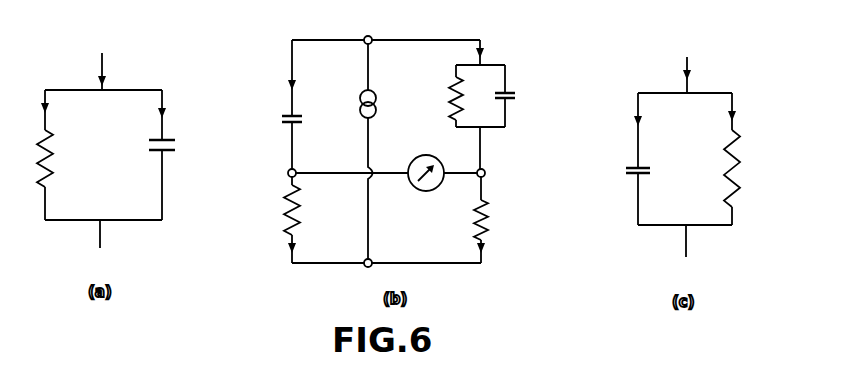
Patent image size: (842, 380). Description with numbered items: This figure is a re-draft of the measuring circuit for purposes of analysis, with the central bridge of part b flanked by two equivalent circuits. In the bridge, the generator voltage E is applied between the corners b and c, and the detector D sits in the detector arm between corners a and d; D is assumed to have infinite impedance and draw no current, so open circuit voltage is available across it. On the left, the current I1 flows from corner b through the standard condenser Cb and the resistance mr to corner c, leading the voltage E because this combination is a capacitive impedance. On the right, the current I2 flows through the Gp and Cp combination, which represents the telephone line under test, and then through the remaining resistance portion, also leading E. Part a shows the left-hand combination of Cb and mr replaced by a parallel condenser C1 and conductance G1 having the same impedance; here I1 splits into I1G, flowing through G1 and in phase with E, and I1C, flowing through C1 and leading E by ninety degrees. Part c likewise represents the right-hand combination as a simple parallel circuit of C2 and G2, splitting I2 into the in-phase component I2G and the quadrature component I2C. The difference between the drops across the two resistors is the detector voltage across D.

The left-hand current I1 is at (204, 161).
The conductance component of current I1 I1G is at (28, 112).
The capacitive component of current I1 I1C is at (172, 117).
The conductance G1 is at (55, 158).
The condenser C1 is at (167, 155).
The right-hand current I2 is at (591, 157).
The quadrature component of current I2 I2C is at (649, 124).
The in-phase component of current I2 I2G is at (744, 117).
The condenser C2 is at (648, 178).
The conductance G2 is at (744, 168).
The standard condenser Cb is at (301, 129).
The generator voltage E is at (370, 105).
The line conductance Gp is at (442, 98).
The line capacitance Cp is at (515, 100).
The detector D is at (426, 183).
The resistance mr is at (277, 210).
The bridge corner a is at (489, 174).
The bridge corner b is at (367, 32).
The bridge corner c is at (367, 274).
The bridge corner d is at (282, 174).